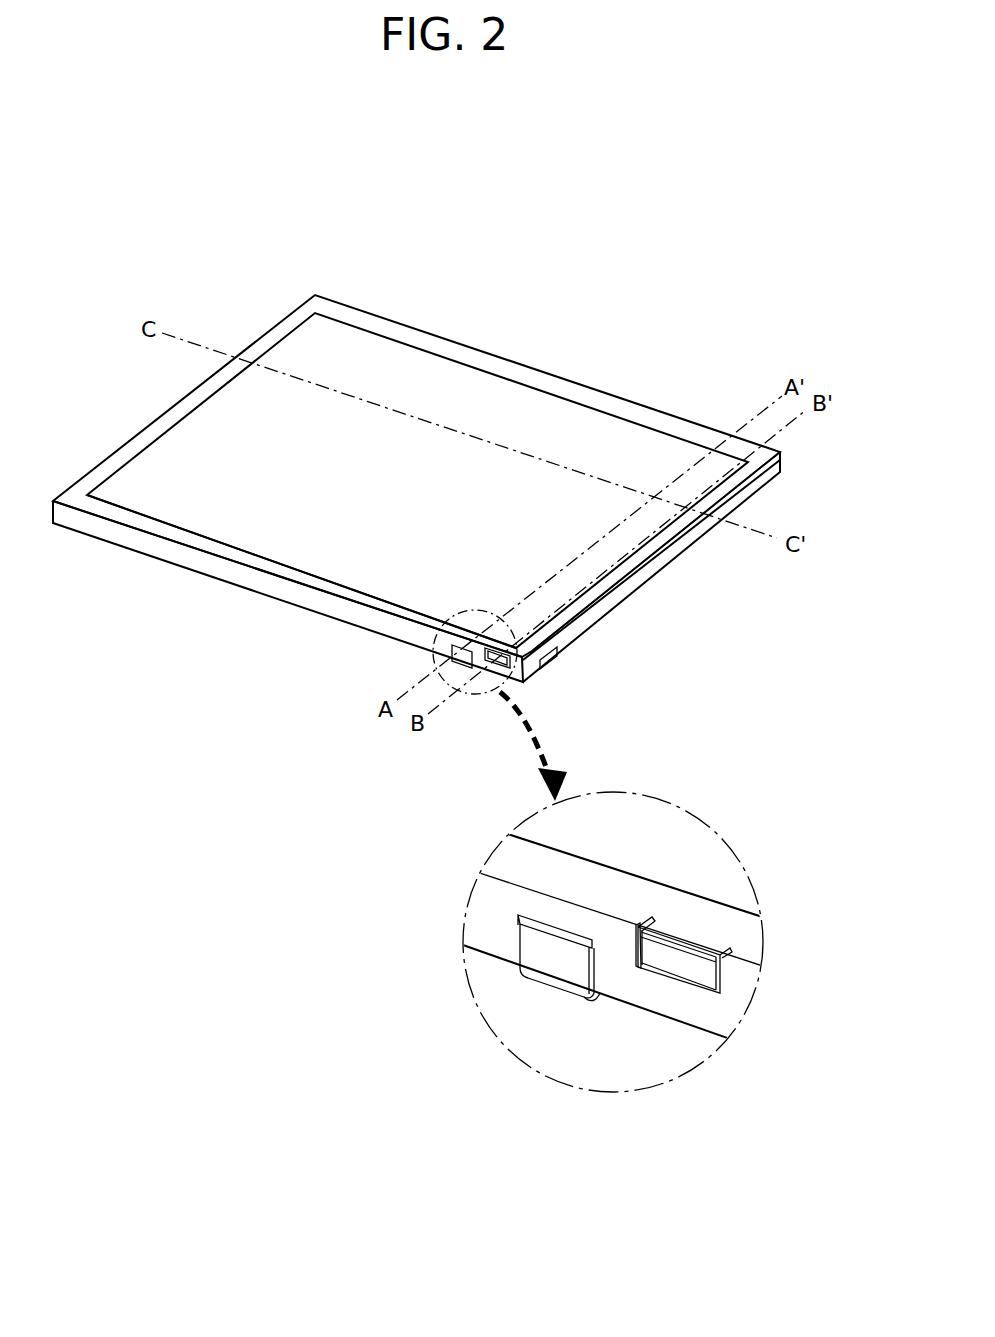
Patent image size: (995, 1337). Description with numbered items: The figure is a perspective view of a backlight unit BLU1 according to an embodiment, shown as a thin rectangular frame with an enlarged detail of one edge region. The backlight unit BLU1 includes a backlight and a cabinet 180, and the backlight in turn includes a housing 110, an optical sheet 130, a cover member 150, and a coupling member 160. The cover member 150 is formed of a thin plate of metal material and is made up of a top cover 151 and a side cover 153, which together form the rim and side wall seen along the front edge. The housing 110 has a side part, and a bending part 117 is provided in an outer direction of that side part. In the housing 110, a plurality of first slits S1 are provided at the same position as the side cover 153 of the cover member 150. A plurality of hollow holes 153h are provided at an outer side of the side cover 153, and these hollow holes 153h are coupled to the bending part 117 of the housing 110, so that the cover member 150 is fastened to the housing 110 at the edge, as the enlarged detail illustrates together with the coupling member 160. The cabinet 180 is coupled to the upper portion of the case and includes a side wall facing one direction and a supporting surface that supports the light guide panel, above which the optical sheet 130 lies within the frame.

The backlight unit BLU1 is at (290, 228).
The housing 110 is at (543, 664).
The bending part 117 is at (677, 958).
The optical sheet 130 is at (551, 415).
The cover member 150 is at (416, 700).
The top cover 151 is at (316, 583).
The side cover 153 is at (277, 646).
The hollow holes 153h is at (656, 915).
The coupling member 160 is at (557, 962).
The cabinet 180 is at (452, 350).
The first slits S1 is at (520, 937).